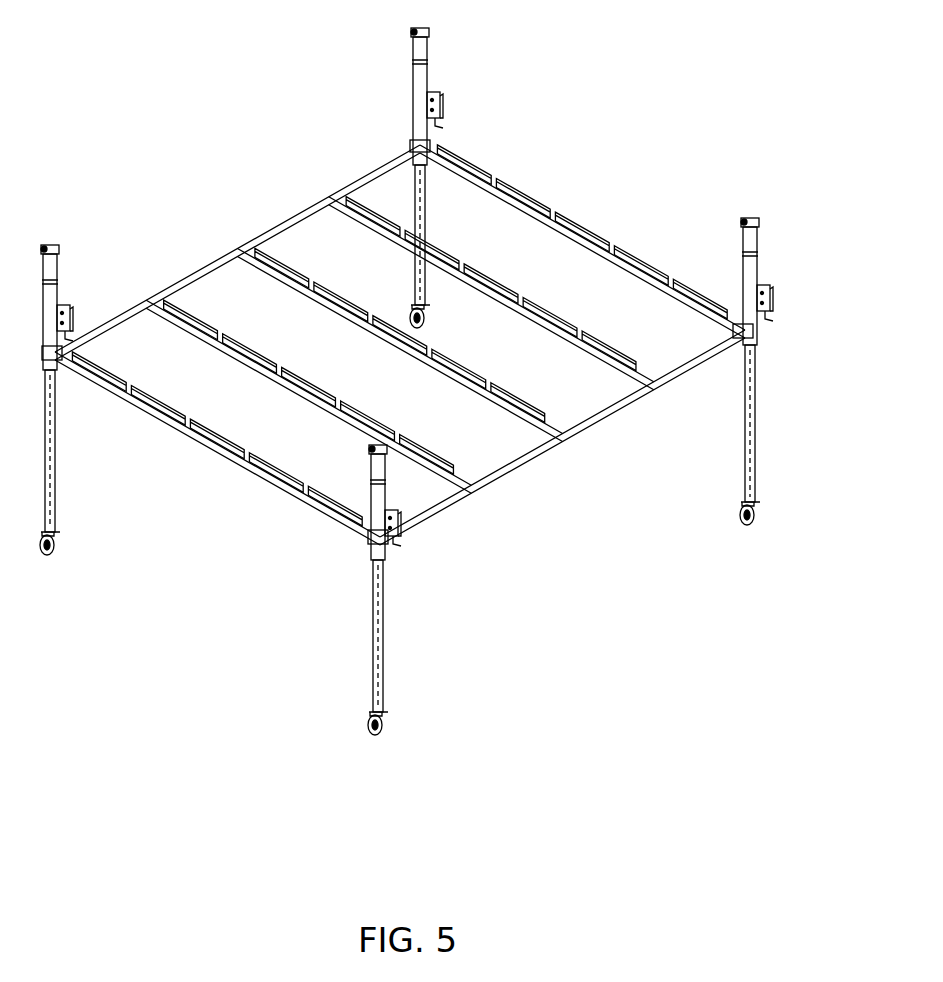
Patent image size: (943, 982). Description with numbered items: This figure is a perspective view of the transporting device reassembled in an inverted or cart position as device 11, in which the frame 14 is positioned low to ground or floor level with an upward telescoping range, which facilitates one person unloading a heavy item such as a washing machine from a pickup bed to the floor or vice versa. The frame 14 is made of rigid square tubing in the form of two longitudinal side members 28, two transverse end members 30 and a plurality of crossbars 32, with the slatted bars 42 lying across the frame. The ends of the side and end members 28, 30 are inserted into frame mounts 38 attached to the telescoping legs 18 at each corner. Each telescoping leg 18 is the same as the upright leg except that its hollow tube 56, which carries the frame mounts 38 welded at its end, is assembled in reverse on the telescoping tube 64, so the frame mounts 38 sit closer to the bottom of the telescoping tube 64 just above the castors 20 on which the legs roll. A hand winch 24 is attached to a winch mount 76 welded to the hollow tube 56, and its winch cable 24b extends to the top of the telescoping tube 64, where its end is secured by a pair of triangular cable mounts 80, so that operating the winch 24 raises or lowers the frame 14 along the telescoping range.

The device 11 is at (153, 805).
The frame 14 is at (220, 132).
The telescoping leg 18 is at (800, 413).
The locking wheels or castors 20 is at (358, 735).
The hand winch 24 is at (432, 540).
The winch cable 24b is at (763, 262).
The longitudinal side members 28 is at (210, 262).
The transverse end members 30 is at (245, 455).
The crossbars 32 is at (283, 360).
The frame mounts 38 is at (735, 330).
The slat 42 is at (486, 145).
The hollow tube 56 is at (372, 555).
The telescoping tube 64 is at (383, 628).
The winch mount 76 is at (766, 325).
The cable mounts 80 is at (745, 230).